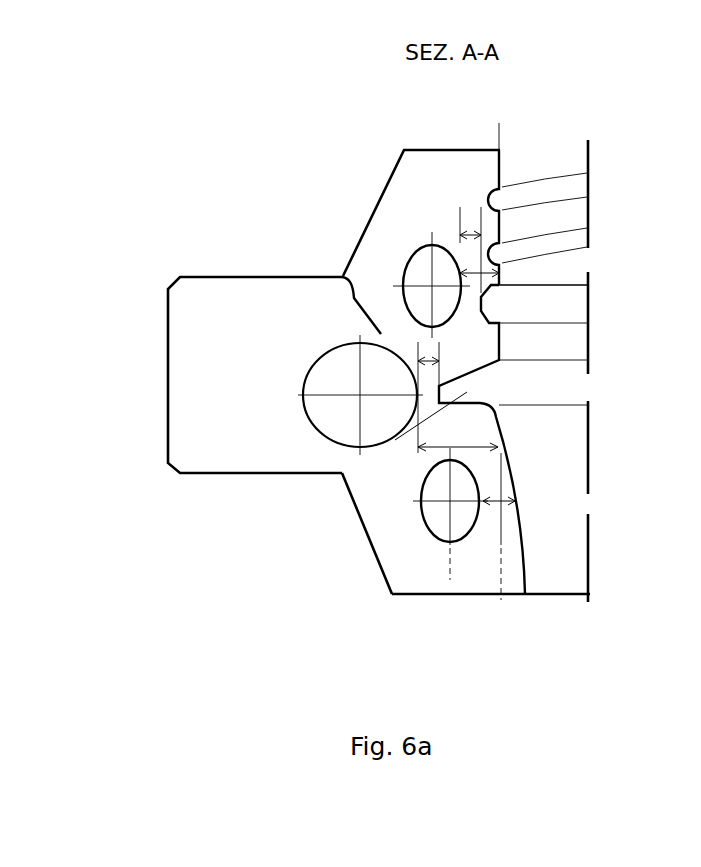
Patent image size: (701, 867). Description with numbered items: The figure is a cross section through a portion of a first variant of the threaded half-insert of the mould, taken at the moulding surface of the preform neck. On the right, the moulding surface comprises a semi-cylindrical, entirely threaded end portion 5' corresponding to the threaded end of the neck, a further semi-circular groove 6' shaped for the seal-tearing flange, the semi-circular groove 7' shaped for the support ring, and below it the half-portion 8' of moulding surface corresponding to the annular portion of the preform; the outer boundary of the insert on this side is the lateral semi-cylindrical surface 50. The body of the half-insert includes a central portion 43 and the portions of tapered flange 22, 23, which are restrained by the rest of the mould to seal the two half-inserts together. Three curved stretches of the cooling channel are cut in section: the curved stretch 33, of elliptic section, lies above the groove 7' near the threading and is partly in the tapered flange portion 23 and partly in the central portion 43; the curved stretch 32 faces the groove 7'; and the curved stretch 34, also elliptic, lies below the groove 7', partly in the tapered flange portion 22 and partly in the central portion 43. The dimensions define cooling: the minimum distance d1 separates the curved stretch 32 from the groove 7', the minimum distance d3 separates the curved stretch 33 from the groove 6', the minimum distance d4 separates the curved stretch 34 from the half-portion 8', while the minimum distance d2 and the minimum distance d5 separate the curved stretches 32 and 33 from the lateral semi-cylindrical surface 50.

The central portion 43 is at (188, 328).
The tapered flange portion 23 is at (393, 207).
The curved stretch 33 is at (418, 272).
The curved stretch 32 is at (327, 410).
The semi-circular groove 7' is at (392, 489).
The curved stretch 34 is at (440, 520).
The tapered flange portion 22 is at (467, 568).
The semi-cylindrical threaded end portion 5' is at (597, 201).
The further semi-circular groove 6' is at (617, 323).
The lateral semi-cylindrical surface 50 is at (503, 347).
The half-portion of moulding surface 8' is at (576, 505).
The minimum distance d1 is at (340, 276).
The minimum distance d2 is at (496, 417).
The minimum distance d3 is at (472, 234).
The minimum distance d4 is at (497, 506).
The minimum distance d5 is at (470, 268).